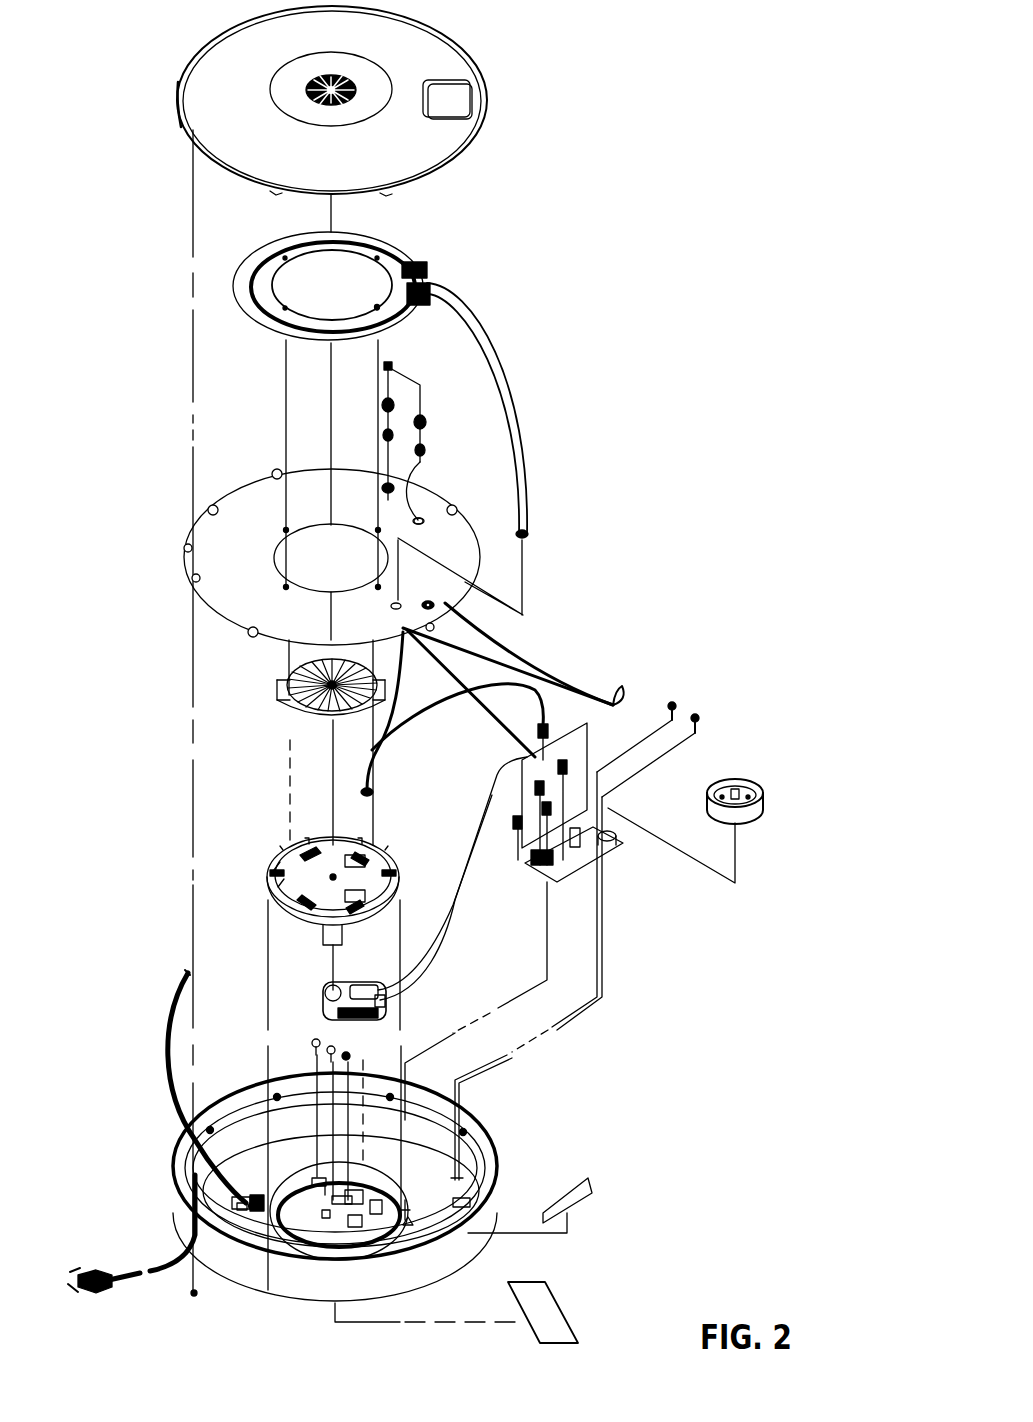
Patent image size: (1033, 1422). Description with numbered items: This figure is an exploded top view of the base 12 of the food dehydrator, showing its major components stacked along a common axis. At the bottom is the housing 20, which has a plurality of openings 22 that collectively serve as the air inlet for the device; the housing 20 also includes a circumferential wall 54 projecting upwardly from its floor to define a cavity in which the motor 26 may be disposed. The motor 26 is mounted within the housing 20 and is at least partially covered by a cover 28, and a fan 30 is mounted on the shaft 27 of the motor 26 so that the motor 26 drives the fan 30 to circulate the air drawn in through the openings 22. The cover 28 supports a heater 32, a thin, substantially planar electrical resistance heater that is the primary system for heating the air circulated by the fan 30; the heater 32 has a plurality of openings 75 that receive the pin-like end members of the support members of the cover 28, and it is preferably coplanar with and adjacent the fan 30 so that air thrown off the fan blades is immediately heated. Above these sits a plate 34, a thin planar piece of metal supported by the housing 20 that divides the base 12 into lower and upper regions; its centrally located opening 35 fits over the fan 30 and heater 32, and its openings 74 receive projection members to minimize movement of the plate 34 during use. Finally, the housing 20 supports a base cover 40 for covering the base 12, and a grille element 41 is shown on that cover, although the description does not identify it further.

The base 12 is at (623, 95).
The housing 20 is at (241, 1268).
The openings 22 is at (312, 1242).
The motor 26 is at (323, 1003).
The shaft 27 is at (341, 984).
The cover 28 is at (272, 862).
The fan 30 is at (282, 706).
The heater 32 is at (265, 329).
The plate 34 is at (186, 546).
The opening 35 is at (315, 553).
The base cover 40 is at (186, 68).
The grille 41 is at (356, 81).
The circumferential wall 54 is at (366, 1243).
The openings 74 is at (252, 637).
The openings 75 is at (384, 250).